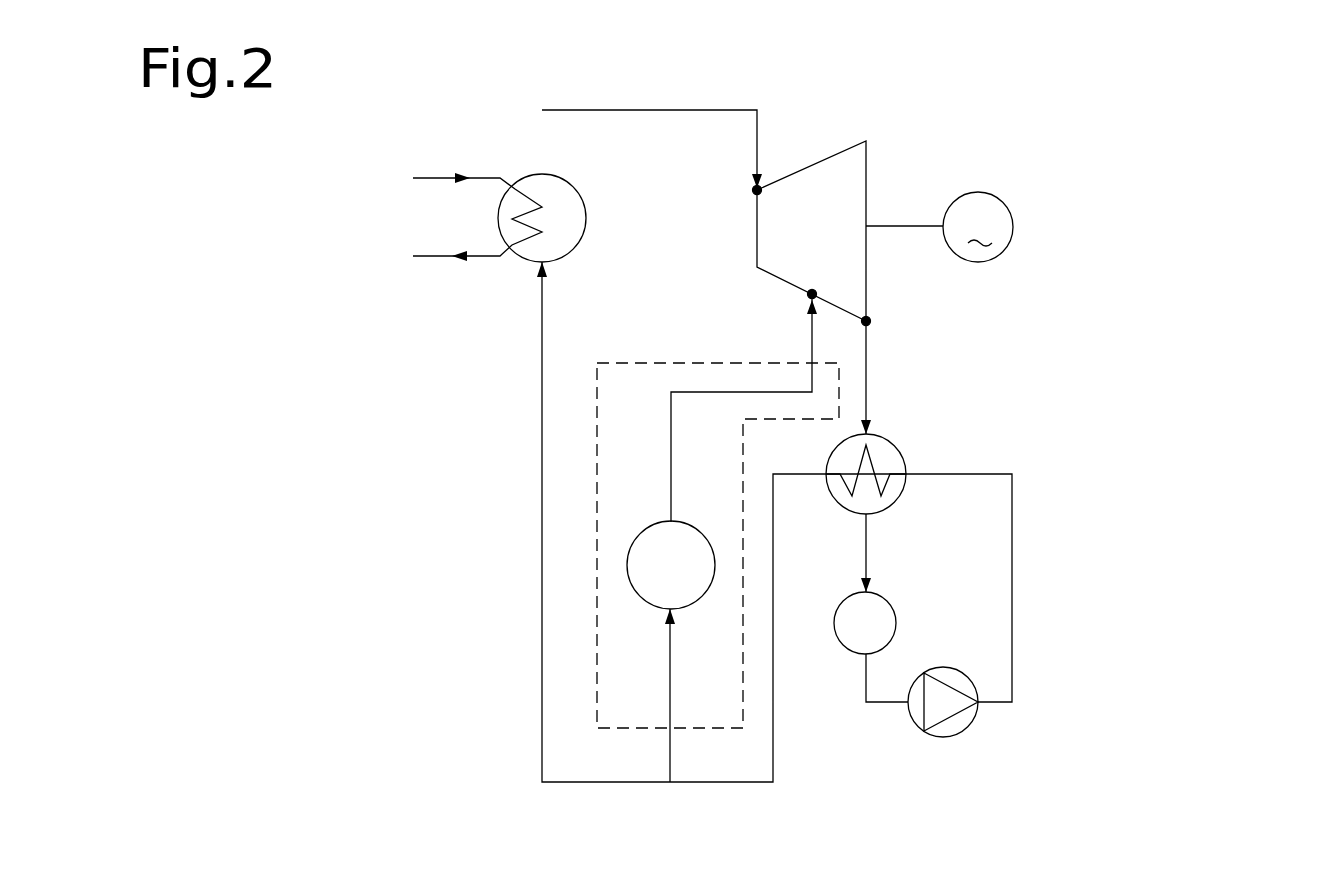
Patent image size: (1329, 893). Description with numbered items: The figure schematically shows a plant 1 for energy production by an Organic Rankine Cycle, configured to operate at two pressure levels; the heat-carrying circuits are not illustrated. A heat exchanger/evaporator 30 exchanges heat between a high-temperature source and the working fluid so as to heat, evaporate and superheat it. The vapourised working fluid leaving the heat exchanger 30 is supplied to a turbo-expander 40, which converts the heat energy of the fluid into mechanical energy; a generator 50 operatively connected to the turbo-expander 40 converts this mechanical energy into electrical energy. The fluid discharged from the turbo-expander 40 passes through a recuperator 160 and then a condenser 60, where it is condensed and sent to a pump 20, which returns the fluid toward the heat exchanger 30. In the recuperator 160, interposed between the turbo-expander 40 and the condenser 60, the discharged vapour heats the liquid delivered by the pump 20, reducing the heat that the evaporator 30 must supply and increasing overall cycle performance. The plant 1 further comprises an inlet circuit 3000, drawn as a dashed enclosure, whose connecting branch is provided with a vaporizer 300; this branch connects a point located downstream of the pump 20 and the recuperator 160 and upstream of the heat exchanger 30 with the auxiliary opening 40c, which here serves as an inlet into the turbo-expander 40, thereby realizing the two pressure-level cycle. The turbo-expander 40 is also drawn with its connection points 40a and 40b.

The plant 1 is at (1170, 497).
The pump 20 is at (968, 730).
The heat exchanger/evaporator 30 is at (560, 180).
The turbo-expander 40 is at (846, 148).
The turbine inlet 40a is at (760, 190).
The turbine outlet 40b is at (866, 321).
The auxiliary opening 40c is at (812, 294).
The generator 50 is at (1005, 205).
The condenser 60 is at (893, 607).
The recuperator 160 is at (902, 455).
The vaporizer 300 is at (640, 530).
The inlet circuit 3000 is at (578, 651).